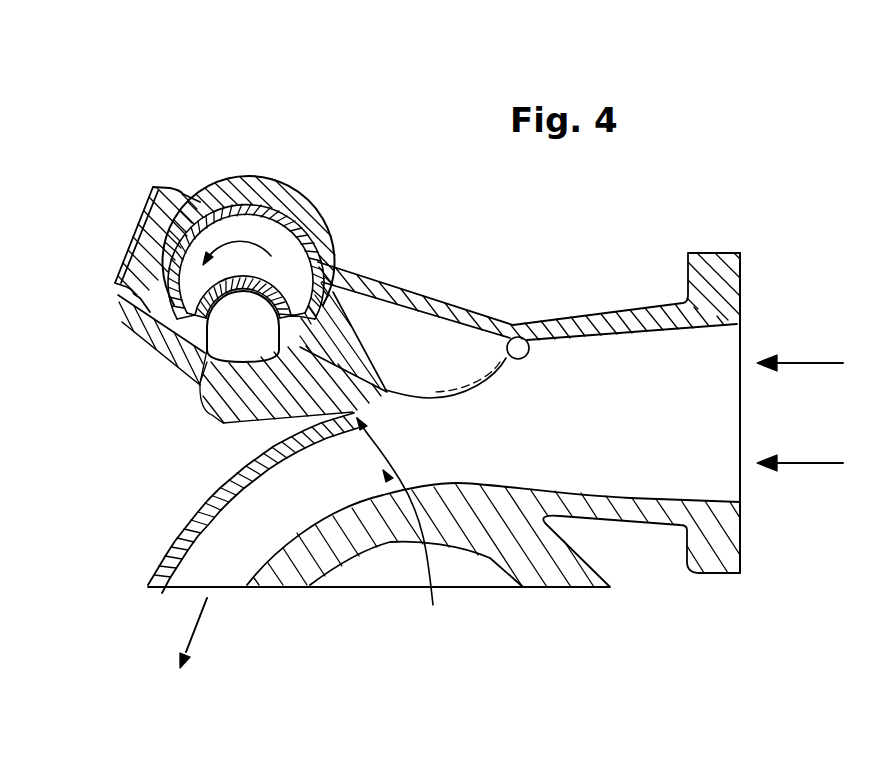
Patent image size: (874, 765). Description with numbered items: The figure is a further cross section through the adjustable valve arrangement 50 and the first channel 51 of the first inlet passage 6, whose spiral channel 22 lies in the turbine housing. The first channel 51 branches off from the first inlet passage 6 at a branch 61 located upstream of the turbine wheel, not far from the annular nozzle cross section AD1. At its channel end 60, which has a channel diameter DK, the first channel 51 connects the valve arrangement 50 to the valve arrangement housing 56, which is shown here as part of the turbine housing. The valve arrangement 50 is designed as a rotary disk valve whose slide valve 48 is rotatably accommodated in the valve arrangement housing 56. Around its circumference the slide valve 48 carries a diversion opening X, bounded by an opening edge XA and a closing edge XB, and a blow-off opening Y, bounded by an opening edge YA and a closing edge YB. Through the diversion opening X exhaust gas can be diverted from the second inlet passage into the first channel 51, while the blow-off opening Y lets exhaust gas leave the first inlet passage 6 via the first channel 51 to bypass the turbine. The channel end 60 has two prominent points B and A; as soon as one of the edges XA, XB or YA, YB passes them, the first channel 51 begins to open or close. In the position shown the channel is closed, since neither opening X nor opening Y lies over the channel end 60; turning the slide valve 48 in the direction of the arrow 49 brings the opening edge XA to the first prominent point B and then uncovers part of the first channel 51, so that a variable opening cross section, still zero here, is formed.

The first inlet passage 6 is at (529, 397).
The spiral channel 22 is at (638, 358).
The slide valve 48 is at (262, 228).
The arrow 49 is at (228, 235).
The valve arrangement 50 is at (308, 181).
The first channel 51 is at (435, 353).
The valve arrangement housing 56 is at (140, 307).
The channel end 60 is at (322, 343).
The branch 61 is at (505, 340).
The prominent point A is at (333, 327).
The first prominent point B is at (308, 405).
The channel diameter DK is at (335, 335).
The diversion opening X is at (232, 343).
The opening edge of the diversion opening XA is at (240, 420).
The closing edge of the diversion opening XB is at (175, 352).
The blow-off opening Y is at (168, 270).
The opening edge of the blow-off opening YA is at (160, 327).
The closing edge of the blow-off opening YB is at (155, 215).
The annular nozzle cross section AD1 is at (408, 532).